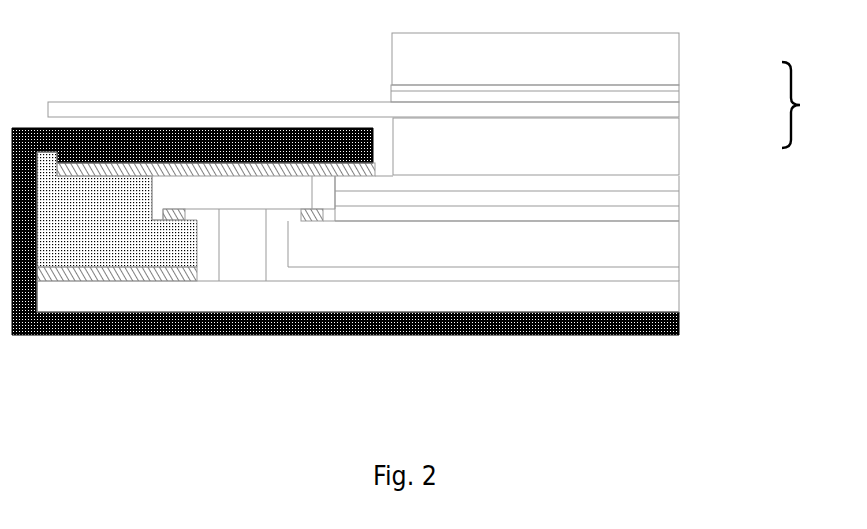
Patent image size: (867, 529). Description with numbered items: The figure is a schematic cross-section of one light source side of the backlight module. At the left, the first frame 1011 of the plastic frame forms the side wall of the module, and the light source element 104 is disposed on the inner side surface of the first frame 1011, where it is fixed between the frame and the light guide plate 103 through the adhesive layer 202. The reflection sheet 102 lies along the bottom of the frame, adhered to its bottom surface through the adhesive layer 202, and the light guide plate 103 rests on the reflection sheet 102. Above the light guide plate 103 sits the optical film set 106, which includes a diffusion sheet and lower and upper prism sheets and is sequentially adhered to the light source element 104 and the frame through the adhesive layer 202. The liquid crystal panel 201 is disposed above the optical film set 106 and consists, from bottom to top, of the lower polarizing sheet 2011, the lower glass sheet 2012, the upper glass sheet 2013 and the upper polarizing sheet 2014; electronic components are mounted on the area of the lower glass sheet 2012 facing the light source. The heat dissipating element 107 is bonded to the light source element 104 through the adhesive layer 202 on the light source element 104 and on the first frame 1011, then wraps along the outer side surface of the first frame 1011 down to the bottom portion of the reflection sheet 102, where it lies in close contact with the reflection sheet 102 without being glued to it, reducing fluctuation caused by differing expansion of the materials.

The first frame 1011 is at (92, 243).
The light source element 104 is at (237, 192).
The adhesive layer 202 is at (152, 281).
The optical film set 106 is at (688, 180).
The light guide plate 103 is at (682, 250).
The reflection sheet 102 is at (682, 295).
The heat dissipating element 107 is at (682, 330).
The lower polarizing sheet 2011 is at (682, 157).
The lower glass sheet 2012 is at (682, 110).
The upper glass sheet 2013 is at (682, 90).
The upper polarizing sheet 2014 is at (682, 52).
The liquid crystal panel 201 is at (813, 105).